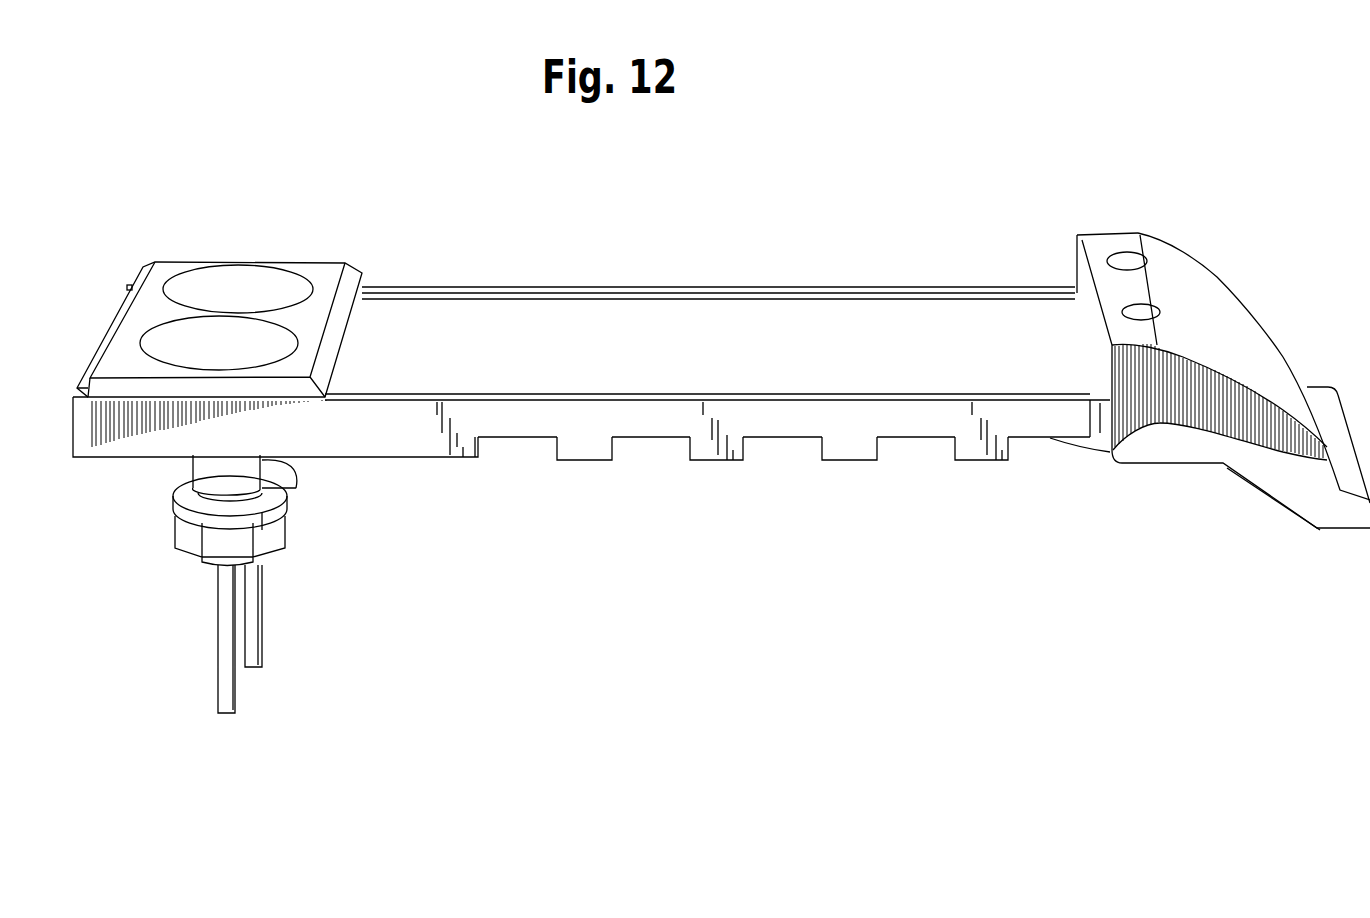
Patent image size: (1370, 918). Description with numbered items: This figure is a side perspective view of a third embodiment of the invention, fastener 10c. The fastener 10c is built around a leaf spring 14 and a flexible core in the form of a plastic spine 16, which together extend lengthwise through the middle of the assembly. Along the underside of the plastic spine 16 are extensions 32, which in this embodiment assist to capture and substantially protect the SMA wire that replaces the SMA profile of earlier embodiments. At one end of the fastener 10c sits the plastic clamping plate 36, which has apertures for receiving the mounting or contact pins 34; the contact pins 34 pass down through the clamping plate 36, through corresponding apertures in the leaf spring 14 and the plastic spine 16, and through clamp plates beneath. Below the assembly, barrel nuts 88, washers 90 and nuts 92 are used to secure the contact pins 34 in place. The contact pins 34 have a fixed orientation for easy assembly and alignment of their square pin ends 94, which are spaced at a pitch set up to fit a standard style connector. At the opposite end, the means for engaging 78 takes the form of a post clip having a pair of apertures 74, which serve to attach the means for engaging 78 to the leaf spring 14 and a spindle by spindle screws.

The fastener 10c is at (792, 142).
The leaf spring 14 is at (580, 313).
The plastic spine 16 is at (875, 290).
The extensions 32 is at (848, 462).
The contact pins 34 is at (270, 330).
The plastic clamping plate 36 is at (168, 270).
The apertures 74 is at (1152, 300).
The means for engaging 78 is at (1240, 298).
The barrel nuts 88 is at (283, 495).
The washers 90 is at (265, 520).
The nuts 92 is at (188, 537).
The square pin ends 94 is at (260, 657).